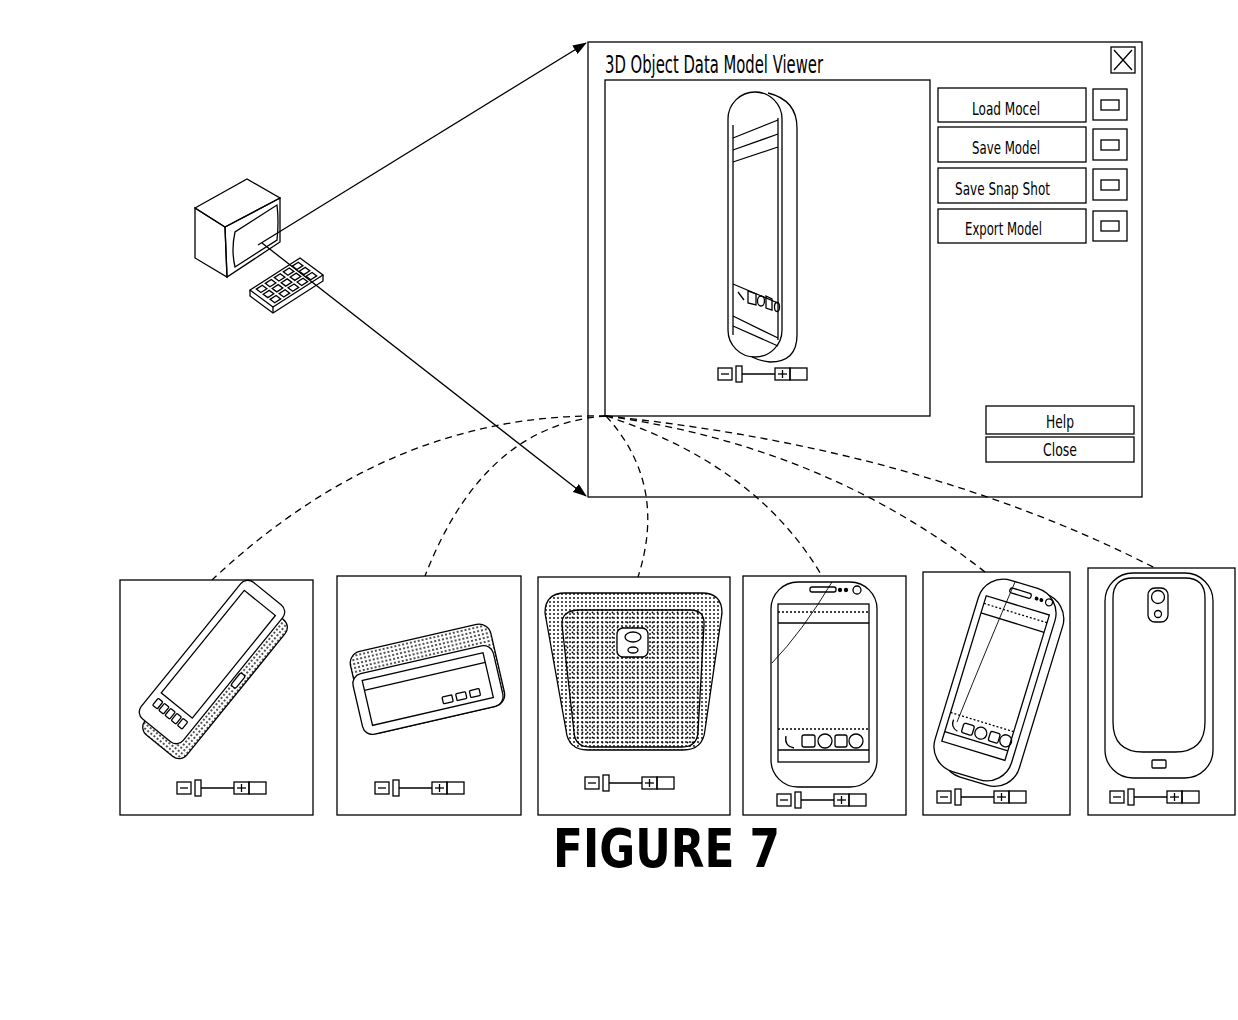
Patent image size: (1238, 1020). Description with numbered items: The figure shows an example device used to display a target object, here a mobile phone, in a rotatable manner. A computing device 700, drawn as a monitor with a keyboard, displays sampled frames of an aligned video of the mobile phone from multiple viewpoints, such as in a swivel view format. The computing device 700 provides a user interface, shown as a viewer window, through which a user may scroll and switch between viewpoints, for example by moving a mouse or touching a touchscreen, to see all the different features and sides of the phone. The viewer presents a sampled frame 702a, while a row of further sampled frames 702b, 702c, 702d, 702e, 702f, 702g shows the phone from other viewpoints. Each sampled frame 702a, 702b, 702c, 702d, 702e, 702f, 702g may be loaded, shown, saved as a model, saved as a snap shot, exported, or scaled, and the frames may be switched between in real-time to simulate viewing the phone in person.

The computing device 700 is at (257, 192).
The sampled frame 702a is at (727, 242).
The sampled frame 702b is at (133, 580).
The sampled frame 702c is at (340, 576).
The sampled frame 702d is at (543, 577).
The sampled frame 702e is at (893, 576).
The sampled frame 702f is at (1053, 572).
The sampled frame 702g is at (1226, 568).